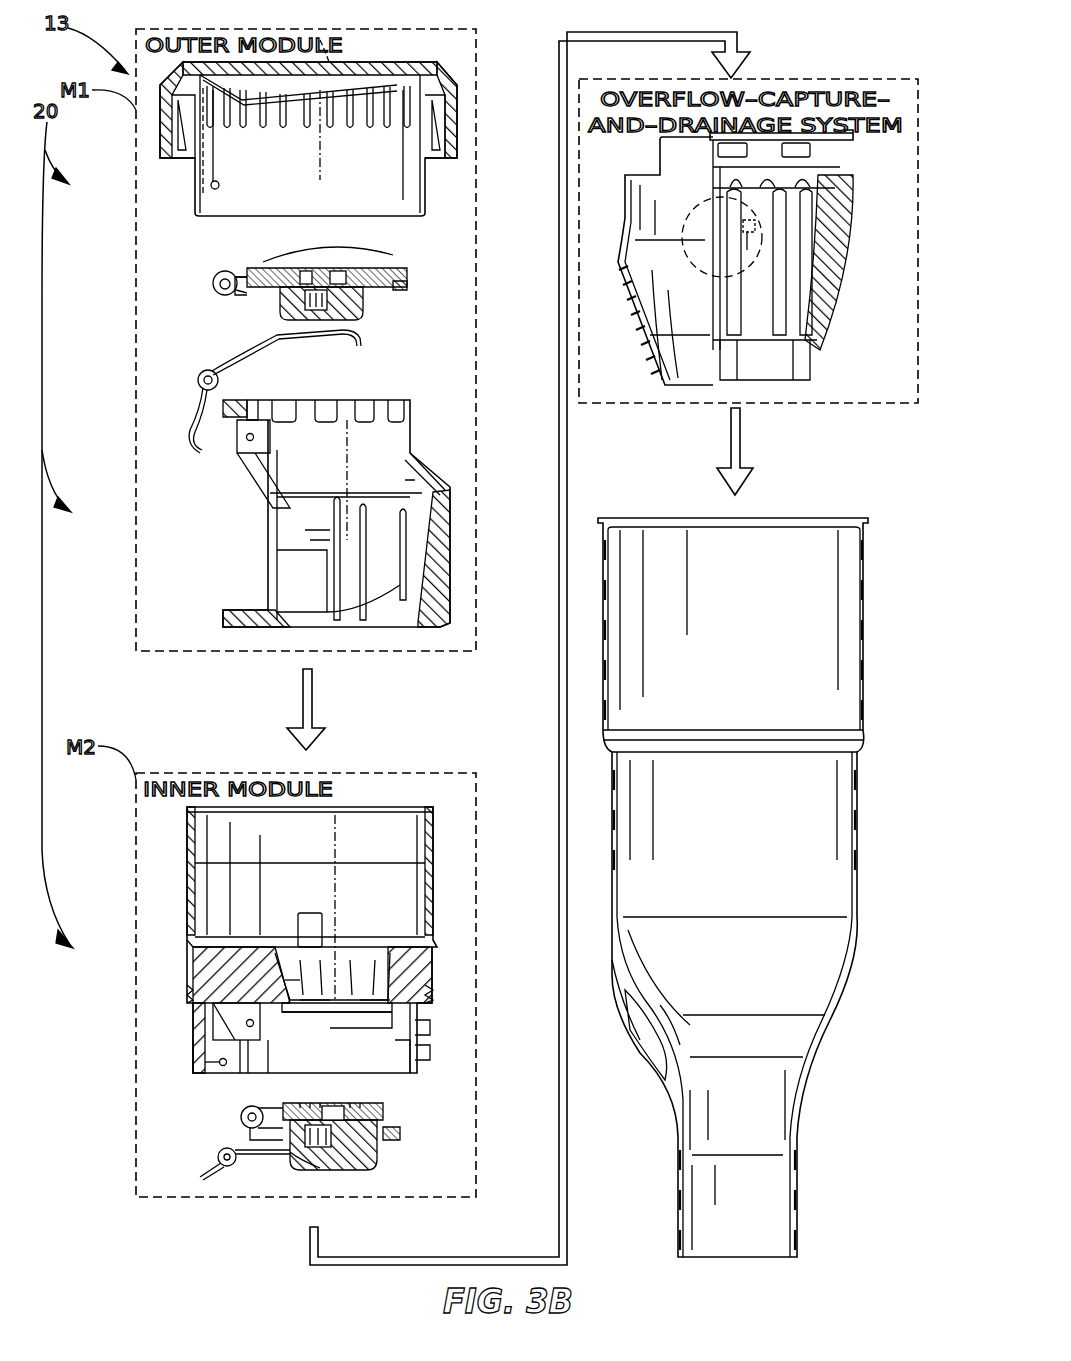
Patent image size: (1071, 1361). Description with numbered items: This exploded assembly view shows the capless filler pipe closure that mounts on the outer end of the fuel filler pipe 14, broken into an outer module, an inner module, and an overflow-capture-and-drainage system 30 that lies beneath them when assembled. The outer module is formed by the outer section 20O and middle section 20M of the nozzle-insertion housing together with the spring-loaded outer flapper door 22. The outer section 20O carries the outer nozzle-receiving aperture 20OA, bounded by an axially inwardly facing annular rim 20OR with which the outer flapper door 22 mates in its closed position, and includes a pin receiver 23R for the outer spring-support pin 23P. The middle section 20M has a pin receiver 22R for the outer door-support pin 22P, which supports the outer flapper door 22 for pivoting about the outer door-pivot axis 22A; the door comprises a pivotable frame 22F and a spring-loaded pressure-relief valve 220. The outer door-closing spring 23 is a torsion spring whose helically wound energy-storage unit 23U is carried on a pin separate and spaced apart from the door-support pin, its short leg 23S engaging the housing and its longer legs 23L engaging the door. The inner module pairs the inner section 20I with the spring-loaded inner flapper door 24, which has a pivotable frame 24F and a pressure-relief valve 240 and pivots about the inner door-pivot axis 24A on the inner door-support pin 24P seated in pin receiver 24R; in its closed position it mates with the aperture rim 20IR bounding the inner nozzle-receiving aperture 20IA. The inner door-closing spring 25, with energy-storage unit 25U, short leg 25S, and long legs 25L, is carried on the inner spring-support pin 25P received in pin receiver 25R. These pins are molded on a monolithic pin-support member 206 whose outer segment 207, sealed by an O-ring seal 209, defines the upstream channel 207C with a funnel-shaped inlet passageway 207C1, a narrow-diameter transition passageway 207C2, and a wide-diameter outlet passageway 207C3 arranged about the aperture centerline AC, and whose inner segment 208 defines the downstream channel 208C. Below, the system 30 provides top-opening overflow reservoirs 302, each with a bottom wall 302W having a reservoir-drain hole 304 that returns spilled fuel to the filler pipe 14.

The fuel filler pipe 14 is at (880, 693).
The outer section 20O is at (262, 143).
The outer nozzle-receiving aperture 20OA is at (397, 88).
The annular rim 20OR is at (280, 130).
The middle section 20M is at (261, 513).
The inner section 20I is at (294, 924).
The inner nozzle-receiving aperture 20IA is at (425, 1030).
The aperture rim 20IR is at (275, 1015).
The outer flapper door 22 is at (300, 251).
The outer door-support pin 22P is at (216, 278).
The outer door-pivot axis 22A is at (235, 296).
The pivotable frame 22F is at (389, 286).
The pin receiver 22R is at (246, 440).
The spring-loaded pressure-relief valve 220 is at (335, 245).
The outer door-closing spring 23 is at (225, 391).
The outer spring-support pin 23P is at (218, 377).
The helically wound energy-storage unit 23U is at (218, 381).
The long legs 23L is at (335, 340).
The short leg 23S is at (196, 452).
The pin receiver 23R is at (211, 187).
The inner flapper door 24 is at (314, 1125).
The inner door-pivot axis 24A is at (257, 1110).
The inner door-support pin 24P is at (243, 1120).
The pivotable frame 24F is at (378, 1146).
The pin receiver 24R is at (246, 1024).
The spring-loaded pressure-relief valve 240 is at (354, 1098).
The inner door-closing spring 25 is at (248, 1201).
The inner spring-support pin 25P is at (218, 1160).
The helically wound energy-storage unit 25U is at (232, 1166).
The short leg 25S is at (204, 1180).
The long legs 25L is at (290, 1165).
The pin receiver 25R is at (220, 1066).
The pin-support member 206 is at (80, 1070).
The outer segment 207 is at (188, 978).
The nozzle-receiving upstream channel 207C is at (380, 950).
The funnel-shaped nozzle inlet passageway 207C1 is at (300, 985).
The narrow-diameter transition passageway 207C2 is at (330, 1000).
The wide-diameter outlet passageway 207C3 is at (390, 1003).
The inner segment 208 is at (193, 1055).
The downstream nozzle-receiving channel 208C is at (400, 1045).
The O-ring seal 209 is at (430, 992).
The overflow-capture-and-drainage system 30 is at (762, 203).
The overflow reservoirs 302 is at (806, 170).
The bottom wall 302W is at (748, 233).
The reservoir-drain hole 304 is at (755, 240).
The aperture centerline AC is at (328, 70).